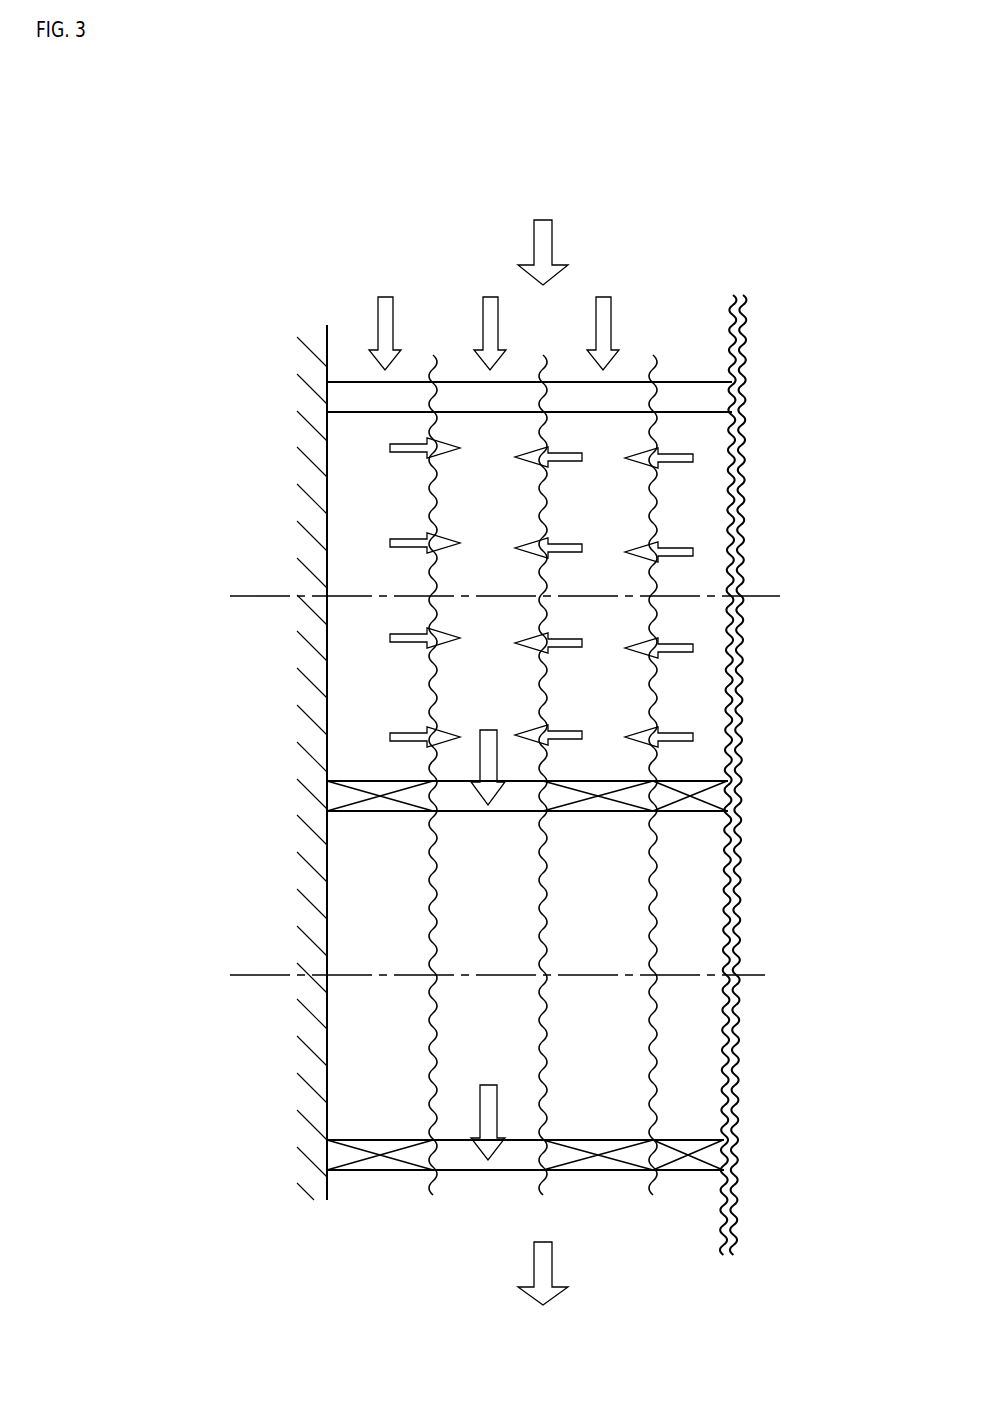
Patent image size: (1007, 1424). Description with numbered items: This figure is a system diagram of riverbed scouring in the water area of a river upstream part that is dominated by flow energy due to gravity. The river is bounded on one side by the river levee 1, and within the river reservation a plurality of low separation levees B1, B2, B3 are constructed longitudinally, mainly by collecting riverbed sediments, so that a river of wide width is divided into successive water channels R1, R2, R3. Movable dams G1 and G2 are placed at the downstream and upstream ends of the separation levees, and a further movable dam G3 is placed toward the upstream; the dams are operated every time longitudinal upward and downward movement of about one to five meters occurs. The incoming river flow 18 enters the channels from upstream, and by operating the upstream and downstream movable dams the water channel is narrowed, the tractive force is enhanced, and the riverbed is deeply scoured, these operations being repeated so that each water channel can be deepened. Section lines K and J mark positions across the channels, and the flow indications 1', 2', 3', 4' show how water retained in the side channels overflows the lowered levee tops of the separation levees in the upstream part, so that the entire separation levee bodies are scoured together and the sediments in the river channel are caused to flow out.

The height of river levee 1 is at (251, 762).
The gas flow 18 is at (546, 245).
The first region R1 is at (386, 753).
The second region R2 is at (519, 786).
The third region R3 is at (604, 753).
The separation levee B1 is at (434, 776).
The separation levee B2 is at (544, 776).
The separation levee B3 is at (657, 776).
The movable dam G1 is at (524, 1155).
The movable dam G2 is at (524, 796).
The movable dam G3 is at (528, 397).
The section line K is at (509, 596).
The section line J is at (495, 975).
The first flow 1' is at (542, 453).
The second flow 2' is at (542, 548).
The third flow 3' is at (542, 643).
The fourth flow 4' is at (542, 736).